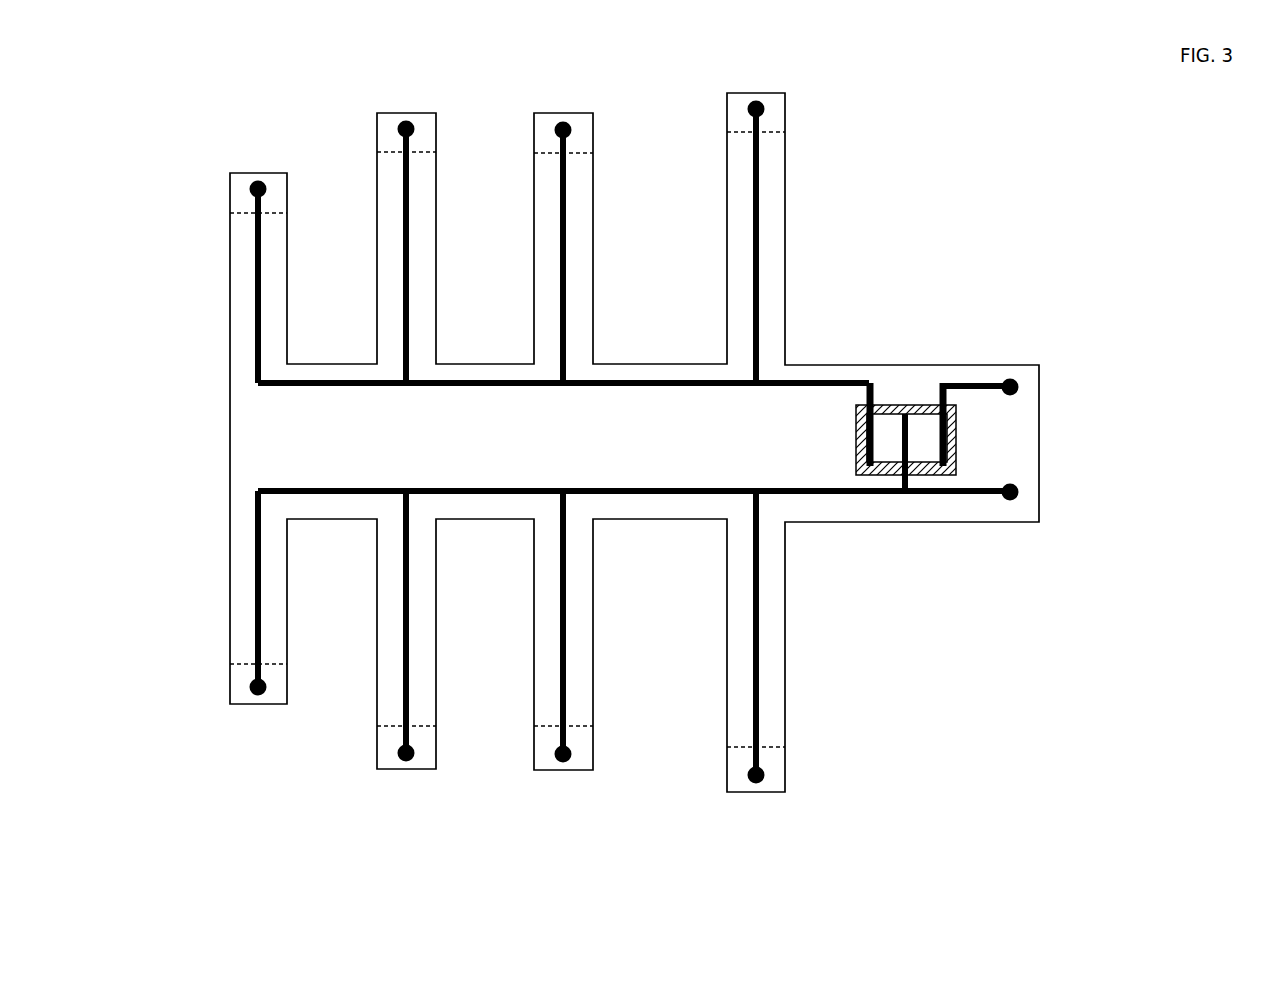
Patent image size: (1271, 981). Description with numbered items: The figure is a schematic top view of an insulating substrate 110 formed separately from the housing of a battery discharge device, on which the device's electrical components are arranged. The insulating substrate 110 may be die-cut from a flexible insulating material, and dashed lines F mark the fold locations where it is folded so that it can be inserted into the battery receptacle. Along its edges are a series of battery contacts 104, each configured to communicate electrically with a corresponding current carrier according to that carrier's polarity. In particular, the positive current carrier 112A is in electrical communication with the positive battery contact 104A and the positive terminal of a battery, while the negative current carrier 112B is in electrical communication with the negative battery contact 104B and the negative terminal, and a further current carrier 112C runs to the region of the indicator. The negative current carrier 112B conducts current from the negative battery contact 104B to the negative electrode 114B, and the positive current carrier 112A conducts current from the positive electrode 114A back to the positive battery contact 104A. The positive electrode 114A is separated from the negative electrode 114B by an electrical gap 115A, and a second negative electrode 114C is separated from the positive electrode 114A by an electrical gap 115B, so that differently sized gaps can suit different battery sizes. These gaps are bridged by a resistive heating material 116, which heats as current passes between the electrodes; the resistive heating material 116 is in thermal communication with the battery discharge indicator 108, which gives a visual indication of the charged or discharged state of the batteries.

The insulating substrate 110 is at (805, 298).
The fold locations F is at (785, 132).
The positive current carrier 112A is at (516, 488).
The negative current carrier 112B is at (585, 387).
The current carrier 112C is at (983, 383).
The negative battery contact 104B is at (405, 124).
The positive battery contact 104A is at (407, 761).
The battery contact 104 is at (757, 783).
The battery discharge indicator 108 is at (962, 433).
The electrical gap 115A is at (892, 412).
The electrical gap 115B is at (922, 468).
The resistive heating material 116 is at (882, 422).
The negative electrode 114B is at (861, 397).
The negative electrode 114C is at (947, 393).
The positive electrode 114A is at (903, 486).